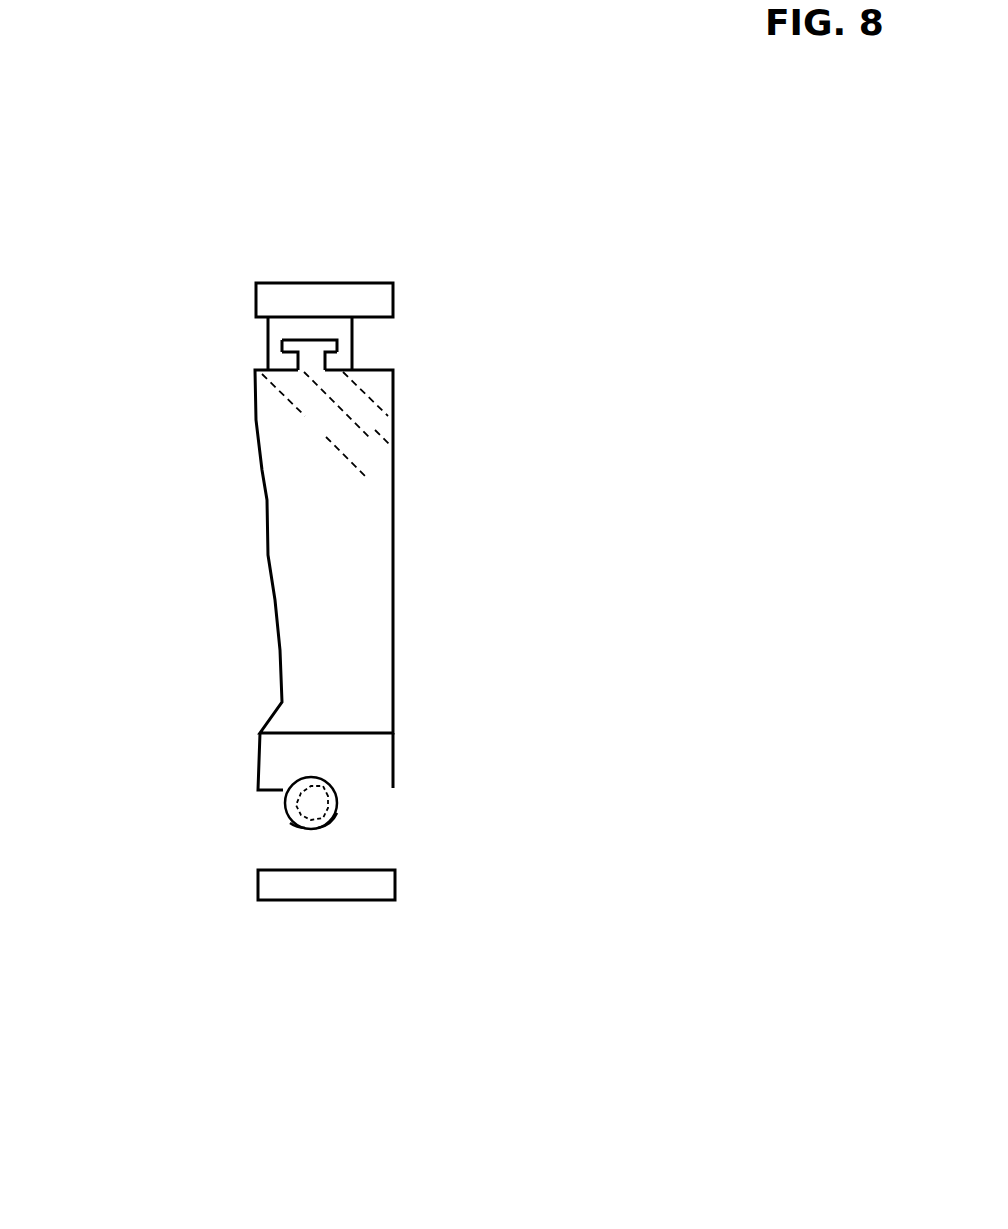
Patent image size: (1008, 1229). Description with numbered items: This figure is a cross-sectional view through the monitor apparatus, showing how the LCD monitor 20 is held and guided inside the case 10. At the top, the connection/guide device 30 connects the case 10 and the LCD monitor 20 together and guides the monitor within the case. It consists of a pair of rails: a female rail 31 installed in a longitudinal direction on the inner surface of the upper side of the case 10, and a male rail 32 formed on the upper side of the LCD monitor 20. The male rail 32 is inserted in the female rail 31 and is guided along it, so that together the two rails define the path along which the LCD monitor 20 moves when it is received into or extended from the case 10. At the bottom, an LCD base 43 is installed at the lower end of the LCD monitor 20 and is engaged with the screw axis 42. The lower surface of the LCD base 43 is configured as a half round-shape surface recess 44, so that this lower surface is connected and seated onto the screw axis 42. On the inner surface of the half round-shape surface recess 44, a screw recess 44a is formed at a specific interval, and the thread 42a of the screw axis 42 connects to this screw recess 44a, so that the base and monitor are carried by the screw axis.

The case 10 is at (321, 302).
The LCD monitor 20 is at (268, 555).
The connection/guide device 30 is at (441, 316).
The female rail 31 is at (338, 365).
The male rail 32 is at (327, 338).
The screw axis 42 is at (337, 813).
The thread 42a is at (290, 823).
The LCD base 43 is at (383, 753).
The half round-shape surface recess 44 is at (287, 805).
The screw recess 44a is at (337, 795).